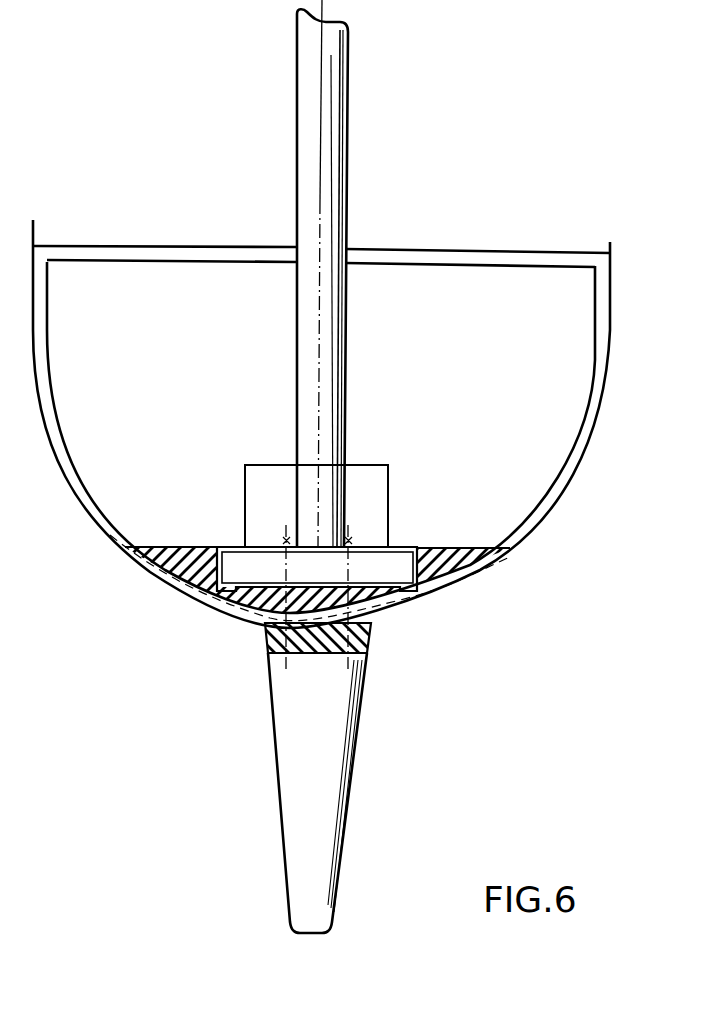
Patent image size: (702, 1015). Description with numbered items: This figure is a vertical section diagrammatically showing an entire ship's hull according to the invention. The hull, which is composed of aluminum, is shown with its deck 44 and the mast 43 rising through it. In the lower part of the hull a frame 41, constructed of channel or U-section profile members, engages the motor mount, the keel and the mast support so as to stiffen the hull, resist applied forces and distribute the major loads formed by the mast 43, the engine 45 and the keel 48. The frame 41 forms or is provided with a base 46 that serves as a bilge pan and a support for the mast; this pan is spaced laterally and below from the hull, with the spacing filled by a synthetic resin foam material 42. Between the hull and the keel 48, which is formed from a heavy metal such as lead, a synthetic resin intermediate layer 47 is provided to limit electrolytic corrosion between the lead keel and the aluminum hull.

The frame 41 is at (398, 575).
The filler material 42 is at (197, 580).
The mast 43 is at (333, 88).
The deck 44 is at (458, 262).
The engine 45 is at (373, 486).
The base 46 is at (420, 580).
The keel root 47 is at (372, 640).
The keel 48 is at (333, 848).